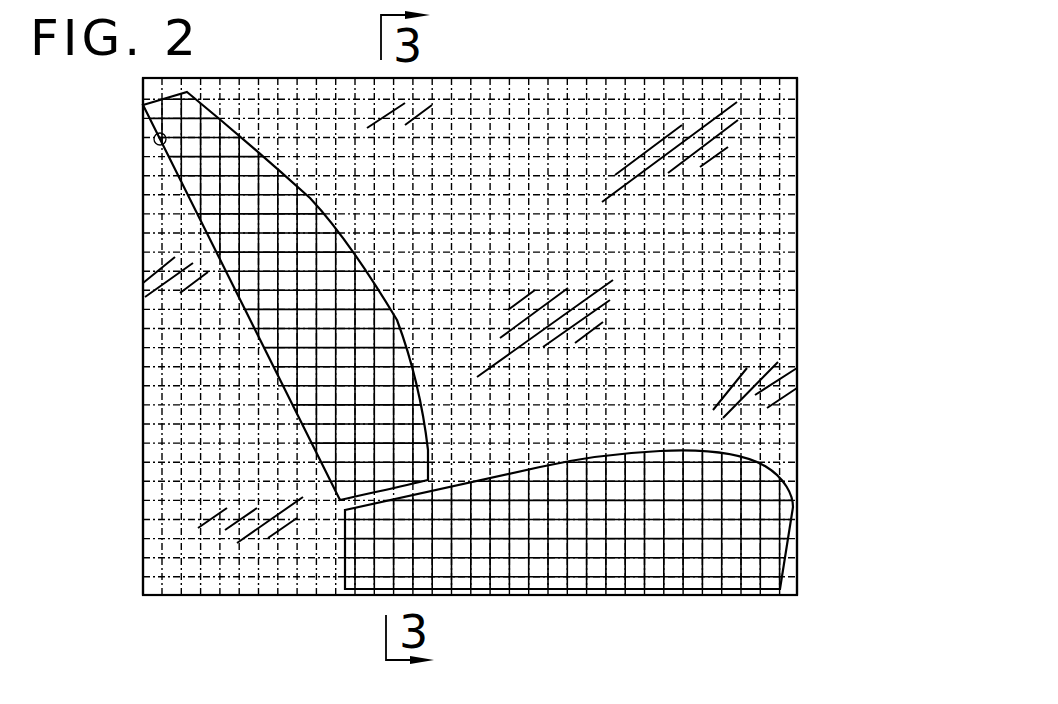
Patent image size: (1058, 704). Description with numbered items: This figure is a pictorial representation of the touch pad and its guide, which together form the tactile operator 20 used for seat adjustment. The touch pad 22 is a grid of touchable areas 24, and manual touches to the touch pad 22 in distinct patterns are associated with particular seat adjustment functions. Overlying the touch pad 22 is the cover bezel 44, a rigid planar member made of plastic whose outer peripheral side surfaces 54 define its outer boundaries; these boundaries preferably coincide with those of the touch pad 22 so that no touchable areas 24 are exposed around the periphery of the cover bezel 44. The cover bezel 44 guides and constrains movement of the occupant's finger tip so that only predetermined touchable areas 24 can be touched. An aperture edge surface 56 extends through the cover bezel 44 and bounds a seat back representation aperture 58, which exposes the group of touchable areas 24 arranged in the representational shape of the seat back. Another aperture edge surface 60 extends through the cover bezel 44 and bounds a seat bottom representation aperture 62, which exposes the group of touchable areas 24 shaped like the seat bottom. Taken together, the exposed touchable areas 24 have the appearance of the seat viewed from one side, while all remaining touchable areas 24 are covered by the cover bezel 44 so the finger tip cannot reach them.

The tactile operator 20 is at (772, 42).
The touch pad 22 is at (553, 118).
The cover bezel 44 is at (621, 95).
The outer peripheral side surfaces 54 is at (267, 78).
The aperture edge surface 56 is at (155, 147).
The seat back representation aperture 58 is at (223, 226).
The touchable areas 24 is at (288, 300).
The aperture edge surface 60 is at (657, 592).
The seat bottom representation aperture 62 is at (548, 602).